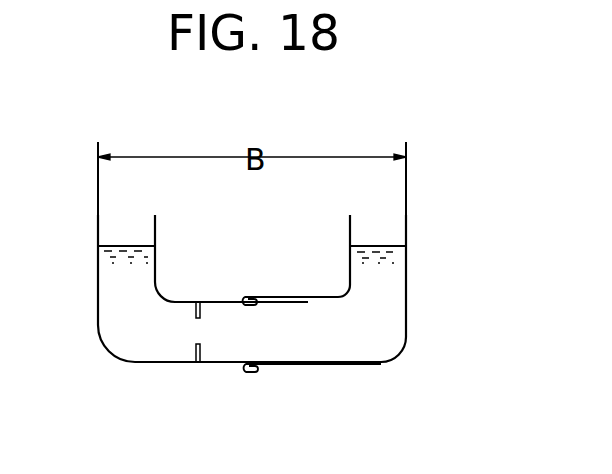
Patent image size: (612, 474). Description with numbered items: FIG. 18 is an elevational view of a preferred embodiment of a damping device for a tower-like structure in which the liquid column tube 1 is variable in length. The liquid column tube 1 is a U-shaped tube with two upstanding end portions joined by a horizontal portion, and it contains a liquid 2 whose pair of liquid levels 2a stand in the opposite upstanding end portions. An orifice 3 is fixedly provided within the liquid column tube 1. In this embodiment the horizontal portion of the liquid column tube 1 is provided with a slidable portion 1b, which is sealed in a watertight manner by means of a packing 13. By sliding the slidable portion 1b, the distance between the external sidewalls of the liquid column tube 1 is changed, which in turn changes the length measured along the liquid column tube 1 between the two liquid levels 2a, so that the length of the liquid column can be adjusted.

The liquid column tube 1 is at (402, 355).
The slidable portion 1b is at (302, 366).
The liquid 2 is at (393, 292).
The liquid levels 2a is at (388, 247).
The orifice 3 is at (195, 352).
The packing 13 is at (247, 373).